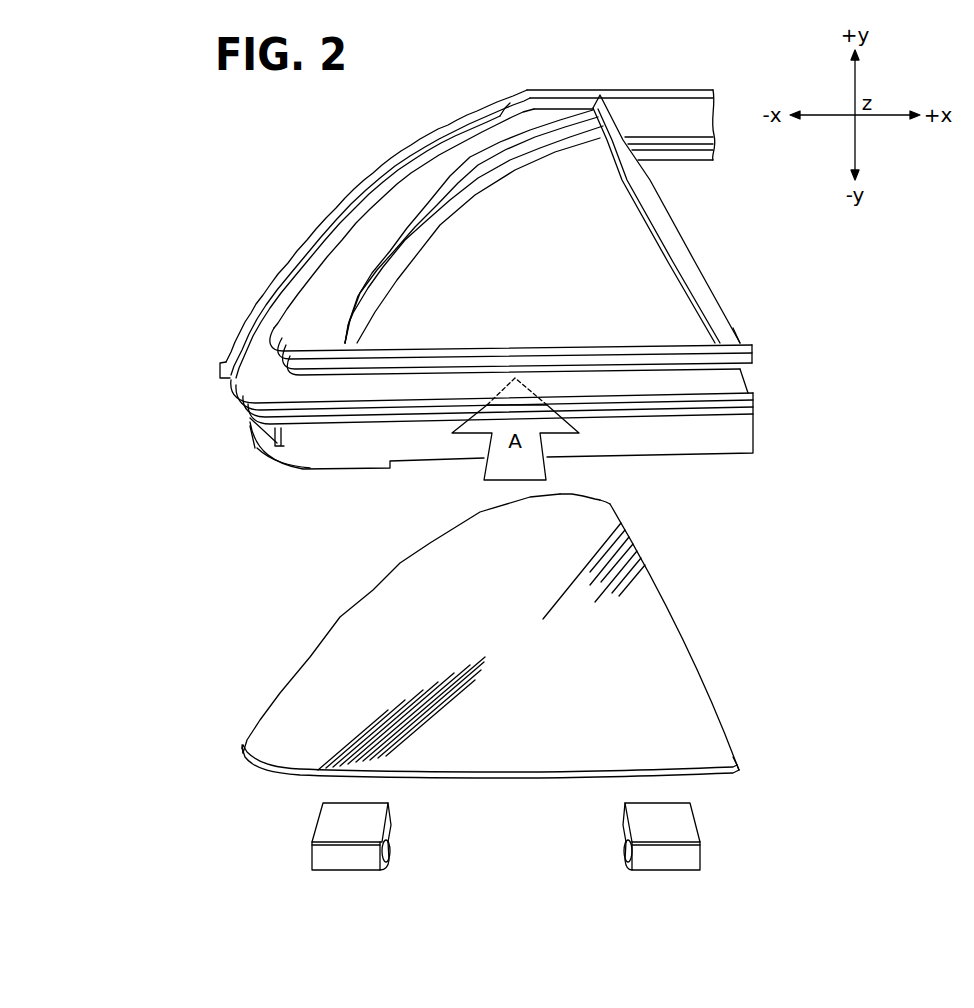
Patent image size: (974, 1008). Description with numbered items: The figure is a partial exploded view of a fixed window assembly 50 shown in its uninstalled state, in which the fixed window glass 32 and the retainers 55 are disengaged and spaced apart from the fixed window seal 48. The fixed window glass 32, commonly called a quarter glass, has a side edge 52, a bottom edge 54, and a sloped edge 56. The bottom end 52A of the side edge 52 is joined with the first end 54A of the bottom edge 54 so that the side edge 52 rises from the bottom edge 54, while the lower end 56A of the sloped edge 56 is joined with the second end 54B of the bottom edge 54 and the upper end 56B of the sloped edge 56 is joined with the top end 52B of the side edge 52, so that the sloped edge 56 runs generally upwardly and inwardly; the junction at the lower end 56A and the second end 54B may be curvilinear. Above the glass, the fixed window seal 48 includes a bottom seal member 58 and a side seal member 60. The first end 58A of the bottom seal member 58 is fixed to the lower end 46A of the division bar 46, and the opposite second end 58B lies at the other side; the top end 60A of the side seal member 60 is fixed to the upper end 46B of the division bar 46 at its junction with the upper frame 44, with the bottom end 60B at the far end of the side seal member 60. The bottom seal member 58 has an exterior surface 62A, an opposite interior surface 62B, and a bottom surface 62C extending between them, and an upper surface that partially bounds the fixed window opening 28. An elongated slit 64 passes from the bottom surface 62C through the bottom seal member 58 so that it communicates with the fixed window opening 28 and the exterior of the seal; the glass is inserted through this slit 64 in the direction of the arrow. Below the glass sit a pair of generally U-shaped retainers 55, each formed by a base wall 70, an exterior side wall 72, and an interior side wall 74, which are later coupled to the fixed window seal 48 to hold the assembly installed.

The fixed window opening 28 is at (653, 273).
The fixed window glass 32 is at (660, 640).
The upper frame 44 is at (697, 89).
The division bar 46 is at (662, 208).
The lower end of the division bar 46A is at (744, 342).
The upper end of the division bar 46B is at (612, 118).
The fixed window seal 48 is at (311, 193).
The fixed window assembly 50 is at (553, 73).
The side edge 52 is at (710, 696).
The bottom end of the side edge 52A is at (740, 761).
The top end of the side edge 52B is at (608, 503).
The bottom edge 54 is at (493, 781).
The first end of the bottom edge 54A is at (740, 774).
The second end of the bottom edge 54B is at (248, 766).
The retainer 55 is at (350, 878).
The sloped edge 56 is at (340, 616).
The lower end of the sloped edge 56A is at (242, 752).
The upper end of the sloped edge 56B is at (580, 494).
The bottom seal member 58 is at (738, 455).
The first end of the bottom seal member 58A is at (755, 398).
The second end of the bottom seal member 58B is at (250, 421).
The side seal member 60 is at (382, 165).
The top end of the side seal member 60A is at (576, 88).
The bottom end of the side seal member 60B is at (223, 383).
The exterior surface 62A is at (642, 395).
The interior surface 62B is at (362, 428).
The bottom surface 62C is at (737, 386).
The slit 64 is at (460, 421).
The base wall 70 is at (358, 858).
The exterior side wall 72 is at (380, 822).
The interior side wall 74 is at (390, 855).